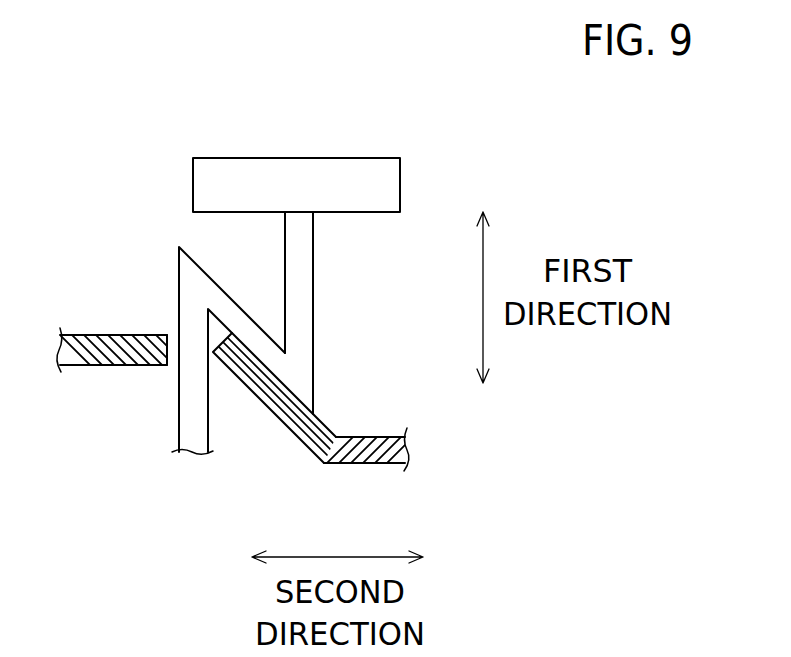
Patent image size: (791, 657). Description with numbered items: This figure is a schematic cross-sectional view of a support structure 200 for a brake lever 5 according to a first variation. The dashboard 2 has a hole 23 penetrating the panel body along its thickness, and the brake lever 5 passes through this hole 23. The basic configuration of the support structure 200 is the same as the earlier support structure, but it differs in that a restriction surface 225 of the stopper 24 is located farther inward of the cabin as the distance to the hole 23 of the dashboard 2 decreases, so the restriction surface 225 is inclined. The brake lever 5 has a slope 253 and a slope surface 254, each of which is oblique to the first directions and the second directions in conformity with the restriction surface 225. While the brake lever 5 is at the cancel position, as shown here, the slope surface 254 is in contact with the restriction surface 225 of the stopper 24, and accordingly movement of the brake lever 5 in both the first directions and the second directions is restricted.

The support structure 200 is at (118, 196).
The dashboard 2 is at (120, 335).
The hole 23 is at (168, 347).
The brake lever 5 is at (313, 278).
The slope 253 is at (255, 323).
The slope surface 254 is at (244, 383).
The restriction surface 225 is at (284, 385).
The stopper 24 is at (292, 432).